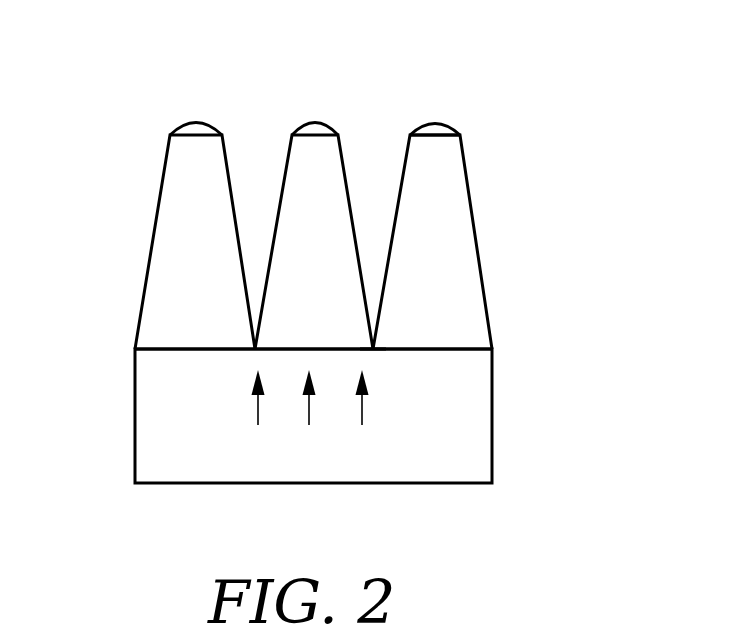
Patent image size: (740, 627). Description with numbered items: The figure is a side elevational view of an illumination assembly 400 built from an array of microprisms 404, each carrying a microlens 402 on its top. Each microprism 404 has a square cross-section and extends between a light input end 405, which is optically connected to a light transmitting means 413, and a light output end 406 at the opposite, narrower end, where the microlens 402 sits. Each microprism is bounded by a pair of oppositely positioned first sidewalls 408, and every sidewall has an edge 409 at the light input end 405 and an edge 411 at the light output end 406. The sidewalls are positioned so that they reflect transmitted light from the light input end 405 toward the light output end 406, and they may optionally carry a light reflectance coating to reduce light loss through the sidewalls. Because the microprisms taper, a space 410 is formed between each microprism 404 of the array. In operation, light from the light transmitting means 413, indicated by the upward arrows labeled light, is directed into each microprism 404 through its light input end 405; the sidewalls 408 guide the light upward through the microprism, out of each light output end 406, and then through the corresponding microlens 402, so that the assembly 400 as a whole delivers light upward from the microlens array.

The illumination assembly 400 is at (543, 240).
The microlens 402 is at (433, 123).
The microprism 404 is at (200, 332).
The light input end 405 is at (463, 352).
The light output end 406 is at (186, 131).
The first sidewall 408 is at (235, 214).
The edge at the light input end 409 is at (373, 350).
The space 410 is at (259, 165).
The edge at the light output end 411 is at (460, 136).
The light transmitting means 413 is at (468, 457).